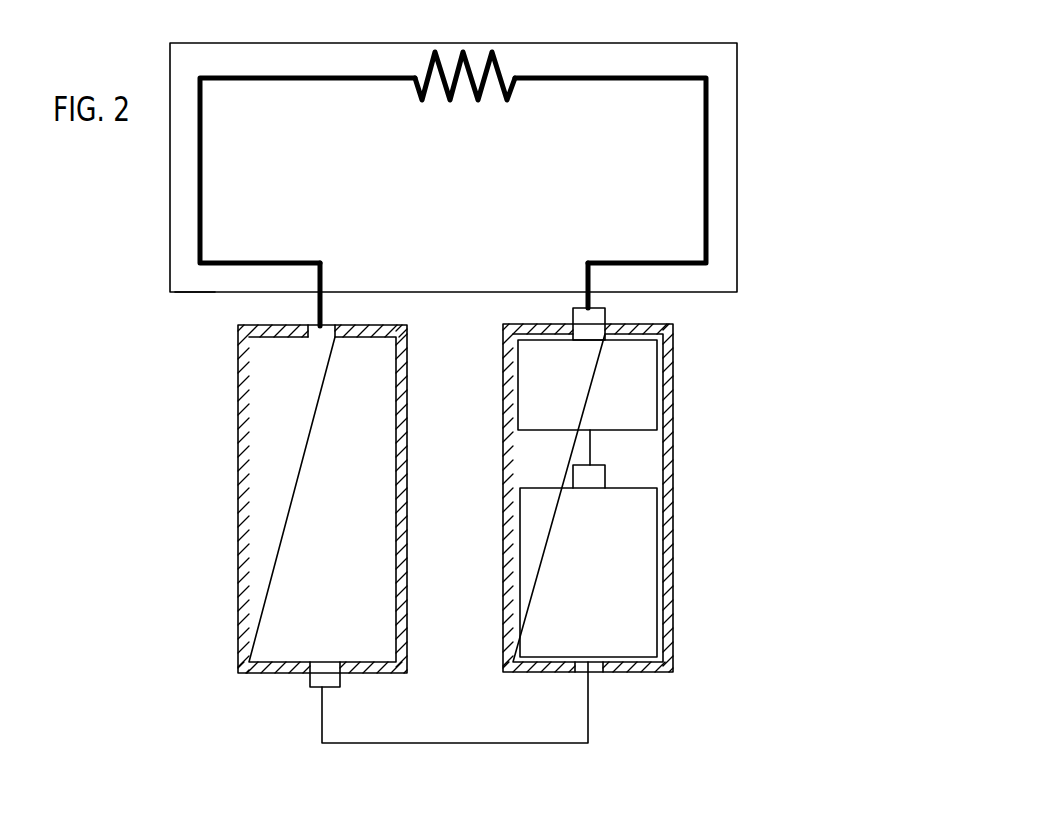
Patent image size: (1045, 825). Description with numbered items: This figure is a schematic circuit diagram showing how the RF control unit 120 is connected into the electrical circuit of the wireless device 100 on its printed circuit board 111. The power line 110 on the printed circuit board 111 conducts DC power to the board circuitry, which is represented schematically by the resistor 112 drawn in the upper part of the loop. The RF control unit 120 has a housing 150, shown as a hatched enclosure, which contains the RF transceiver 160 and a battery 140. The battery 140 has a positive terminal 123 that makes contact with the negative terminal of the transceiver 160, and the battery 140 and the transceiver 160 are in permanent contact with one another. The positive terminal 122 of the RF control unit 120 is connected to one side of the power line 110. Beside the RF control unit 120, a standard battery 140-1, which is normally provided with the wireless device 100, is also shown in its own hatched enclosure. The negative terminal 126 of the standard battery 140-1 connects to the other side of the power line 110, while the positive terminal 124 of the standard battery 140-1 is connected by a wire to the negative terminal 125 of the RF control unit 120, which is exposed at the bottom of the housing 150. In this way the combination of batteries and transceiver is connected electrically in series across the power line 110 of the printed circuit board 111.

The wireless device 100 is at (737, 103).
The power line 110 is at (706, 192).
The printed circuit board 111 is at (193, 292).
The resistor 112 is at (508, 98).
The RF control unit 120 is at (648, 525).
The positive terminal 122 is at (578, 305).
The positive terminal 123 is at (597, 478).
The positive terminal 124 is at (328, 690).
The negative terminal 125 is at (596, 674).
The negative terminal 126 is at (322, 325).
The battery 140 is at (640, 607).
The standard battery 140-1 is at (237, 442).
The housing 150 is at (673, 650).
The RF transceiver 160 is at (648, 397).